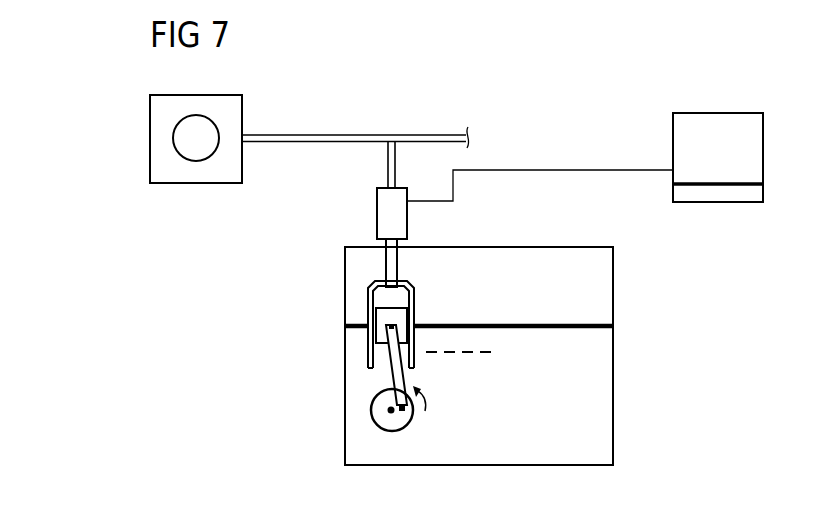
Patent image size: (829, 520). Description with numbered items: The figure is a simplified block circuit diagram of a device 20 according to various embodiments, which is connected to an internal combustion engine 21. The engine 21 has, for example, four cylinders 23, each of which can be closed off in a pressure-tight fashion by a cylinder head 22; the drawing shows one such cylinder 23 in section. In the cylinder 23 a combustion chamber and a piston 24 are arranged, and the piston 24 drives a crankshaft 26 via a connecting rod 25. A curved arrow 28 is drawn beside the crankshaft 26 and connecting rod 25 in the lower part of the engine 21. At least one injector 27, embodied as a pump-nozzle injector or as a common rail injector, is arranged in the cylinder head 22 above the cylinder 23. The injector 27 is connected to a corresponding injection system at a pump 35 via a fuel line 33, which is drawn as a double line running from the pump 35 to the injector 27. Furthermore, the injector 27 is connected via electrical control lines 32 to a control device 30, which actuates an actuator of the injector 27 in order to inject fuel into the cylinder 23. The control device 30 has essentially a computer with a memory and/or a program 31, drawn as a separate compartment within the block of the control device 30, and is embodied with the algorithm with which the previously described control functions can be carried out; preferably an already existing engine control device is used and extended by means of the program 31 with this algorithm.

The device 20 is at (548, 83).
The internal combustion engine 21 is at (599, 388).
The cylinder head 22 is at (599, 286).
The cylinder 23 is at (398, 292).
The piston 24 is at (400, 320).
The connecting rod 25 is at (388, 380).
The crankshaft 26 is at (400, 422).
The injector 27 is at (377, 213).
The direction of rotation 28 is at (427, 405).
The control device 30 is at (718, 120).
The program 31 is at (722, 192).
The electrical control lines 32 is at (580, 168).
The fuel line 33 is at (290, 140).
The pump 35 is at (197, 186).